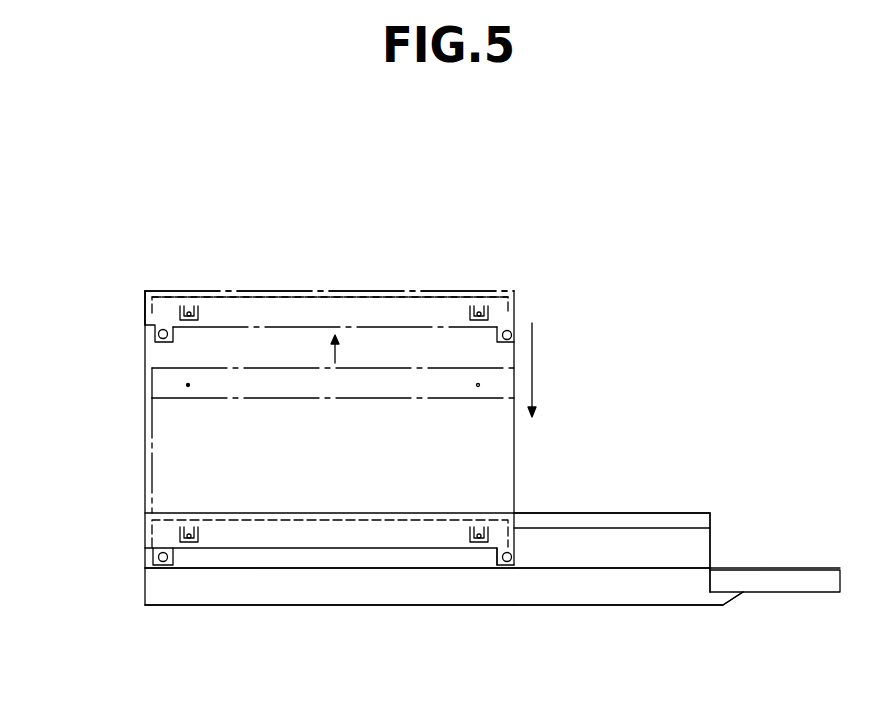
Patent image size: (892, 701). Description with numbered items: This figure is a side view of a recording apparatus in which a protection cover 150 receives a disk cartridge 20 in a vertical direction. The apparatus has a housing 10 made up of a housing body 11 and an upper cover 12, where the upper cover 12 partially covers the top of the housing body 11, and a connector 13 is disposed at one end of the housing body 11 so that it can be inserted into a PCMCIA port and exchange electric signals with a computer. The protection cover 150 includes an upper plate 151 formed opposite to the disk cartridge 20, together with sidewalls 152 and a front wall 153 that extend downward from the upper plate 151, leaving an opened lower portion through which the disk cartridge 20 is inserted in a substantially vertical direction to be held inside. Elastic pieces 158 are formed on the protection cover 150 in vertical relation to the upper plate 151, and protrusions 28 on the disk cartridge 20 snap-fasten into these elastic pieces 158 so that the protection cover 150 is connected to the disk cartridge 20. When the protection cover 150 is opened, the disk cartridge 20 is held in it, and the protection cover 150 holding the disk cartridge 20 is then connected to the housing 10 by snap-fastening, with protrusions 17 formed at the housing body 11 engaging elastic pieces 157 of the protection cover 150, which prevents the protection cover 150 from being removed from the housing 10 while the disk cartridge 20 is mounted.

The housing 10 is at (758, 501).
The housing body 11 is at (645, 583).
The upper cover 12 is at (662, 513).
The connector 13 is at (795, 583).
The protrusions 17 is at (505, 565).
The disk cartridge 20 is at (508, 388).
The protrusions 28 is at (188, 385).
The protection cover 150 is at (505, 312).
The upper plate 151 is at (300, 292).
The sidewalls 152 is at (364, 312).
The front wall 153 is at (137, 302).
The elastic pieces 157 is at (158, 333).
The elastic pieces 158 is at (190, 306).